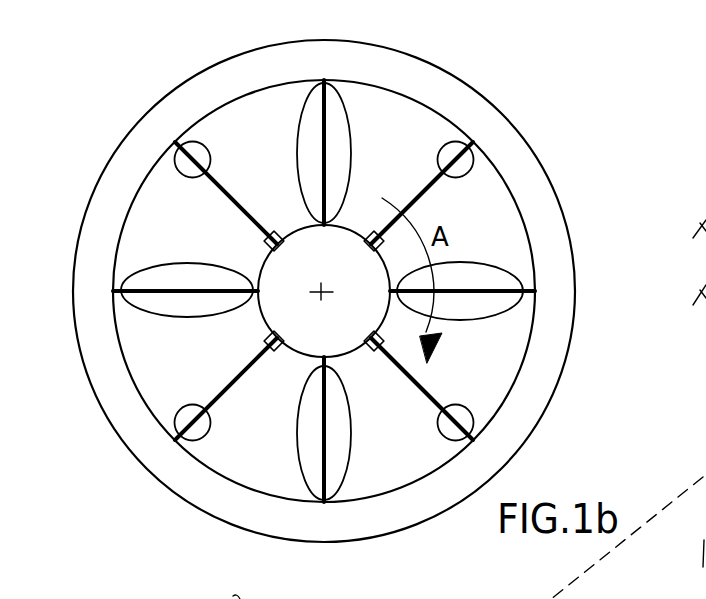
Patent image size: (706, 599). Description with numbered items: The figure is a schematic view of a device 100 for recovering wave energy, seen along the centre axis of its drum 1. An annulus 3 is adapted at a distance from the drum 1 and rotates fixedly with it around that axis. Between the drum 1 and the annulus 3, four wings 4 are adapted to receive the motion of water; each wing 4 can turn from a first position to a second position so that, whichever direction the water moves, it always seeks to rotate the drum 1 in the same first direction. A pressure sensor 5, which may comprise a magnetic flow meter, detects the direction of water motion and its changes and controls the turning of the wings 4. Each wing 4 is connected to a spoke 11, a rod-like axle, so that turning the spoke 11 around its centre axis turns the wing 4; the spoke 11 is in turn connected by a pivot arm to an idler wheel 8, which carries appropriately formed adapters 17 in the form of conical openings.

The device 100 is at (582, 131).
The drum 1 is at (348, 280).
The annulus 3 is at (578, 228).
The wings 4 is at (349, 153).
The pressure sensor 5 is at (186, 167).
The idler wheel 8 is at (562, 353).
The spoke 11 is at (323, 131).
The adapters 17 is at (204, 586).